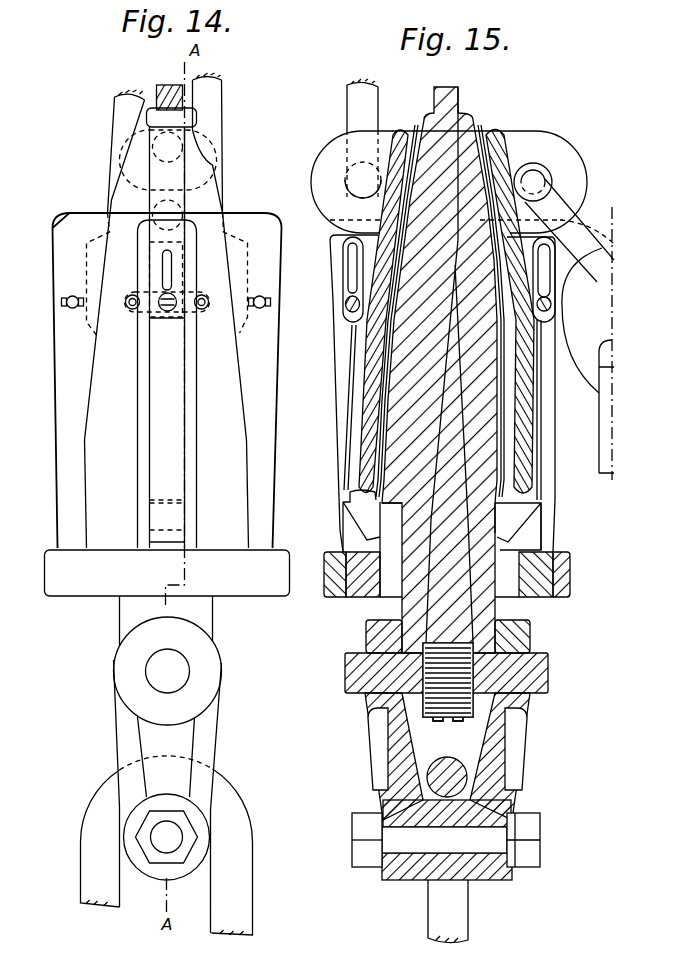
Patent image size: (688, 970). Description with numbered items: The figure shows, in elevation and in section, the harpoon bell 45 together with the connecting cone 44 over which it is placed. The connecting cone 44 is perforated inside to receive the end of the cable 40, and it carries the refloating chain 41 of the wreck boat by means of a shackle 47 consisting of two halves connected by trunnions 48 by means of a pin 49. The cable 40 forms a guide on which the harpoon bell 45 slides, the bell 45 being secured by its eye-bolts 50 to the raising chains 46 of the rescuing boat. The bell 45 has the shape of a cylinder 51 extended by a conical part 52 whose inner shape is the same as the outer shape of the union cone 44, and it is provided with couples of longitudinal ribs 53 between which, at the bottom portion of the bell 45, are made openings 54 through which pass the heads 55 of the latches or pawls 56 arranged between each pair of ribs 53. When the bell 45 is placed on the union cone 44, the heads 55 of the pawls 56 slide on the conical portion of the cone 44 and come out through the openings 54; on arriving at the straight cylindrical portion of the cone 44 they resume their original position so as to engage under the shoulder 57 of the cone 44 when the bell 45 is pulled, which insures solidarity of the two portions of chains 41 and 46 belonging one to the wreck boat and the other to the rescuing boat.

In FIG. 14, the cable 40 is at (163, 88).
In FIG. 15, the cable 40 is at (451, 100).
In FIG. 14, the refloating chain 41 is at (245, 868).
In FIG. 15, the refloating chain 41 is at (453, 903).
In FIG. 15, the connecting cone 44 is at (485, 398).
In FIG. 14, the harpoon bell 45 is at (225, 407).
In FIG. 15, the harpoon bell 45 is at (369, 400).
In FIG. 14, the raising chains 46 is at (208, 98).
In FIG. 15, the raising chains 46 is at (363, 138).
In FIG. 14, the shackle 47 is at (197, 737).
In FIG. 15, the shackle 47 is at (488, 777).
In FIG. 15, the trunnions 48 is at (423, 878).
In FIG. 14, the pin 49 is at (160, 835).
In FIG. 15, the pin 49 is at (393, 833).
In FIG. 14, the eye-bolts 50 is at (184, 173).
In FIG. 15, the eye-bolts 50 is at (280, 160).
In FIG. 14, the cylinder 51 is at (232, 487).
In FIG. 15, the cylinder 51 is at (385, 490).
In FIG. 14, the conical part 52 is at (217, 320).
In FIG. 15, the conical part 52 is at (384, 320).
In FIG. 15, the longitudinal ribs 53 is at (545, 515).
In FIG. 14, the openings 54 is at (170, 545).
In FIG. 15, the openings 54 is at (523, 547).
In FIG. 15, the heads 55 is at (360, 512).
In FIG. 14, the latches or pawls 56 is at (172, 448).
In FIG. 15, the latches or pawls 56 is at (325, 443).
In FIG. 15, the shoulder 57 is at (370, 493).